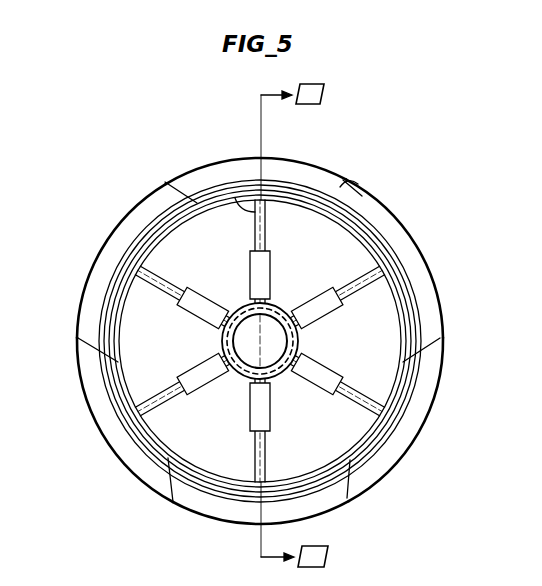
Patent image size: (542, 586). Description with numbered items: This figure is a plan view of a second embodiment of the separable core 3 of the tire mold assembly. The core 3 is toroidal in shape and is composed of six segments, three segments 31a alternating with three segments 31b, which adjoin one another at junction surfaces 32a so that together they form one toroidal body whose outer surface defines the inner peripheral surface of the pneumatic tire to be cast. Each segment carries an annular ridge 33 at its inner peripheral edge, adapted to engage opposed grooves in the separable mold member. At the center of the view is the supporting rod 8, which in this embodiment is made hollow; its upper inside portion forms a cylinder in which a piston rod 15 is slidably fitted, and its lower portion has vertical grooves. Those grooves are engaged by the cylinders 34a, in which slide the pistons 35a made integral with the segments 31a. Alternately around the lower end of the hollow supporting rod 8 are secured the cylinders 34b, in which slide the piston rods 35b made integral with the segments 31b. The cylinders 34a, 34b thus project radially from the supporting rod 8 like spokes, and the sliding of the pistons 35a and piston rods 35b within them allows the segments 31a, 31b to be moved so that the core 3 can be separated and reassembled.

The separable core 3 is at (138, 201).
The supporting rod 8 is at (300, 338).
The piston rod 15 is at (283, 311).
The core segment 31a is at (112, 244).
The core segment 31b is at (300, 168).
The junction surface 32a is at (364, 184).
The annular ridge 33 is at (383, 232).
The cylinder 34a is at (250, 396).
The cylinder 34b is at (251, 275).
The piston 35a is at (268, 408).
The piston rod 35b is at (254, 210).